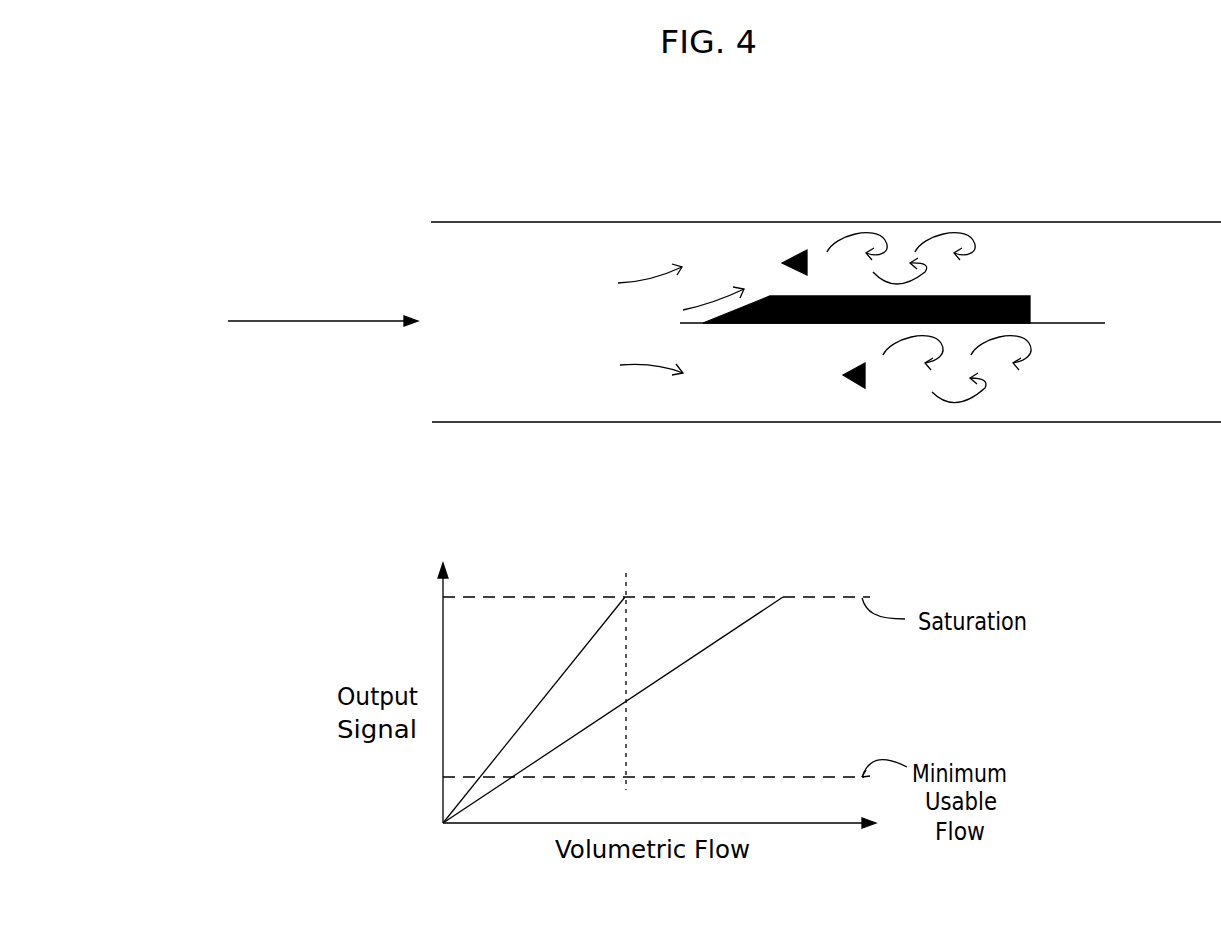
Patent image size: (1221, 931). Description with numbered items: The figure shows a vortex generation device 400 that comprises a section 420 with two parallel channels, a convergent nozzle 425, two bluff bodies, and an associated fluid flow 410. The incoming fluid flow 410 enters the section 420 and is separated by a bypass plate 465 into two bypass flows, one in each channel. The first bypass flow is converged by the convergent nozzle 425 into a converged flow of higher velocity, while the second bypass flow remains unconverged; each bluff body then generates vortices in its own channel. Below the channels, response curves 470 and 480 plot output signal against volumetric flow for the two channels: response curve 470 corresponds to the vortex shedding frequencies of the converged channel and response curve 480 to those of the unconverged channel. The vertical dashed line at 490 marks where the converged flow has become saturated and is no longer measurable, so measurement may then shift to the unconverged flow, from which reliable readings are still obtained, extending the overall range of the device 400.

The device 400 is at (273, 143).
The fluid flow 410 is at (265, 321).
The section 420 is at (477, 222).
The convergent nozzle 425 is at (735, 326).
The bypass plate 465 is at (1078, 322).
The response curve 470 is at (595, 633).
The response curve 480 is at (728, 633).
The saturation point 490 is at (627, 597).